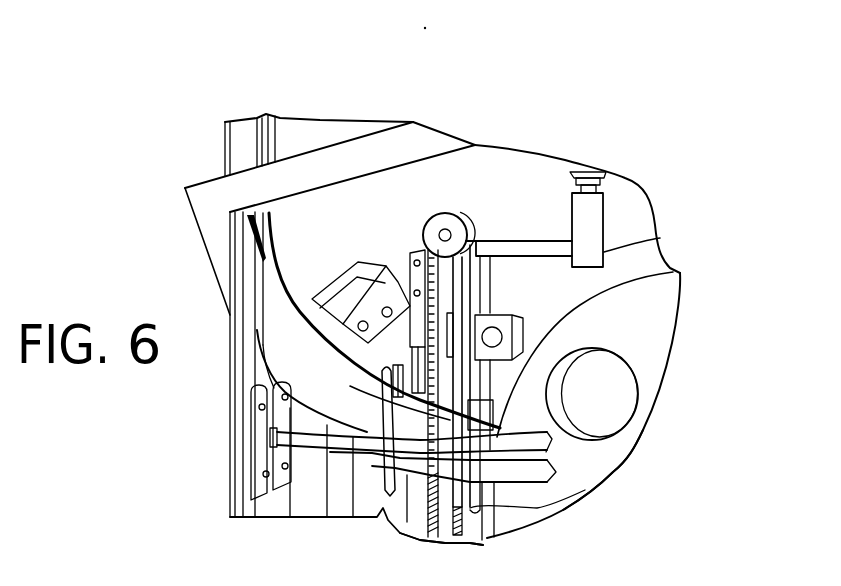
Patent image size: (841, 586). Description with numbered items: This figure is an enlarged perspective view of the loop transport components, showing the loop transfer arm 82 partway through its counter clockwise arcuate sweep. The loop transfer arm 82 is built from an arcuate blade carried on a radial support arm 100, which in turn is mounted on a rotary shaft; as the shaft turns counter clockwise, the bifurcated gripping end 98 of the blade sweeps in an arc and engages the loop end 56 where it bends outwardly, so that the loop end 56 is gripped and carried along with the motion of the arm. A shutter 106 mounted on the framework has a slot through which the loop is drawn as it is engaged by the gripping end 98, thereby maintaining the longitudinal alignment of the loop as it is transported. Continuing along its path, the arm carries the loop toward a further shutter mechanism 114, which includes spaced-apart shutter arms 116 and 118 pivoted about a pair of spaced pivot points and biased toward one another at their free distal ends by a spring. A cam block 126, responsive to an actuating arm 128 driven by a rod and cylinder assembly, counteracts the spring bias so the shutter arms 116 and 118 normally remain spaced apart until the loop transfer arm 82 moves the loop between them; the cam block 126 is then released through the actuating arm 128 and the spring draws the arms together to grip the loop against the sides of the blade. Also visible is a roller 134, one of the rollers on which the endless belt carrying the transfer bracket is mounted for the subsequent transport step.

The loop end 56 is at (552, 452).
The loop transfer arm 82 is at (283, 323).
The bifurcated gripping end 98 is at (556, 471).
The radial support arm 100 is at (322, 162).
The shutter 106 is at (386, 495).
The shutter mechanism 114 is at (620, 223).
The shutter arm 116 is at (485, 545).
The shutter arm 118 is at (560, 510).
The cam block 126 is at (662, 241).
The actuating arm 128 is at (510, 238).
The roller 134 is at (443, 230).